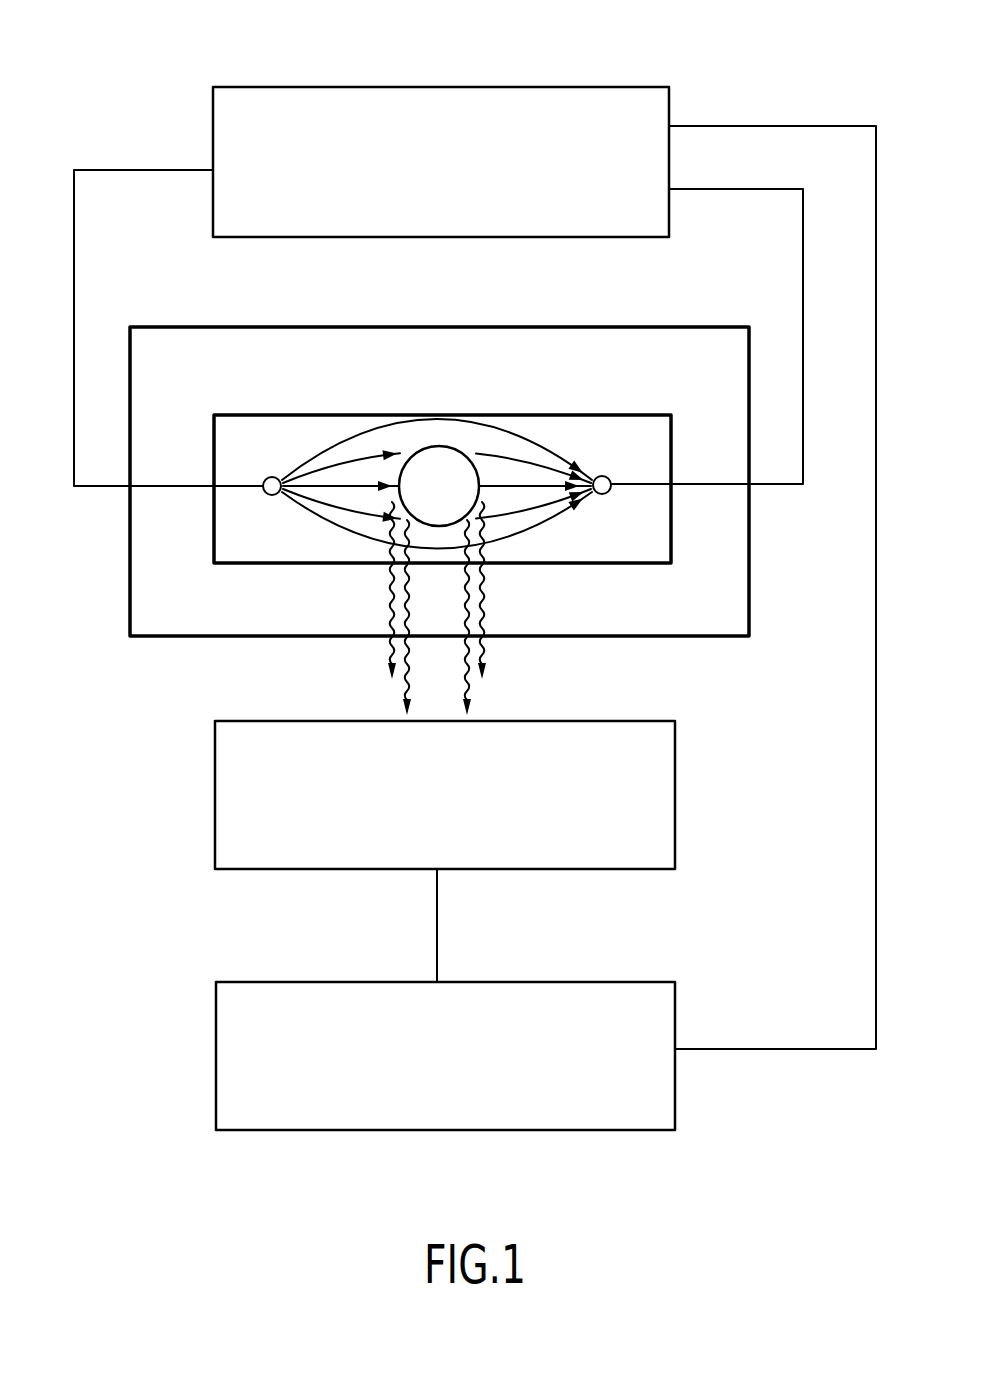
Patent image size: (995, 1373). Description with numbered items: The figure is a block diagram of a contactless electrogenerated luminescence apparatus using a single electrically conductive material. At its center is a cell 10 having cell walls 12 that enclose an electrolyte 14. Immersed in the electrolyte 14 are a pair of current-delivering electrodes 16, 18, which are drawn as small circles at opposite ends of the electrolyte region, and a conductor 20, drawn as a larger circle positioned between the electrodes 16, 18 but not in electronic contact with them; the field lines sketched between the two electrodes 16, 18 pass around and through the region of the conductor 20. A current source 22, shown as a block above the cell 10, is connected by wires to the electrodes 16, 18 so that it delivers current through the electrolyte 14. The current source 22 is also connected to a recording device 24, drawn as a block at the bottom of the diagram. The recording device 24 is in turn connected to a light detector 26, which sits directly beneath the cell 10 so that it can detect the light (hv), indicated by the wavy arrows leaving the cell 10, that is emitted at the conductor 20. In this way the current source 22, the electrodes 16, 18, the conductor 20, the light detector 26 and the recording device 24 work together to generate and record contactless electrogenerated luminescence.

The cell 10 is at (696, 653).
The cell walls 12 is at (130, 557).
The electrolyte 14 is at (650, 460).
The current-delivering electrode 16 is at (272, 476).
The current-delivering electrode 18 is at (603, 475).
The conductor 20 is at (450, 446).
The current source 22 is at (568, 87).
The recording device 24 is at (323, 1130).
The light detector 26 is at (215, 820).